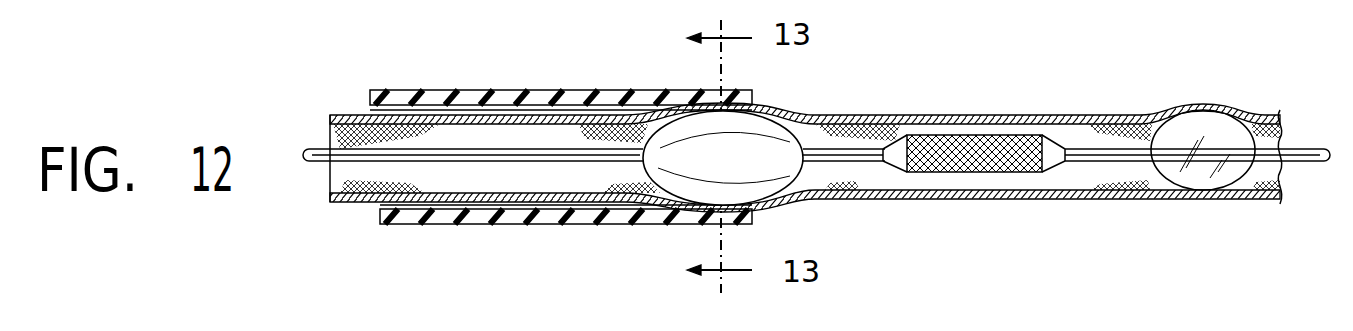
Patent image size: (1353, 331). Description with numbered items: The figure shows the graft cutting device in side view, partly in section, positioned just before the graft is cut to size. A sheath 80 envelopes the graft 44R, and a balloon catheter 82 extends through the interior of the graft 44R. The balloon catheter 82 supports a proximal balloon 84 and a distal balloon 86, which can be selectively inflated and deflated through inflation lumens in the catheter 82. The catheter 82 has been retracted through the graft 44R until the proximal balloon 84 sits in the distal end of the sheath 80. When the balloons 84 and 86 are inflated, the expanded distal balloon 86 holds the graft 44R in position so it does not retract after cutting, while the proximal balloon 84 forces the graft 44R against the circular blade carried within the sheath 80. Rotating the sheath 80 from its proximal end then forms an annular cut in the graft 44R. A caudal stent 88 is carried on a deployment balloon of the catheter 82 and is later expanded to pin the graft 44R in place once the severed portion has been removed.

The graft 44R is at (355, 200).
The sheath 80 is at (528, 97).
The balloon catheter 82 is at (532, 162).
The proximal balloon 84 is at (782, 138).
The distal balloon 86 is at (1208, 177).
The caudal stent 88 is at (985, 160).